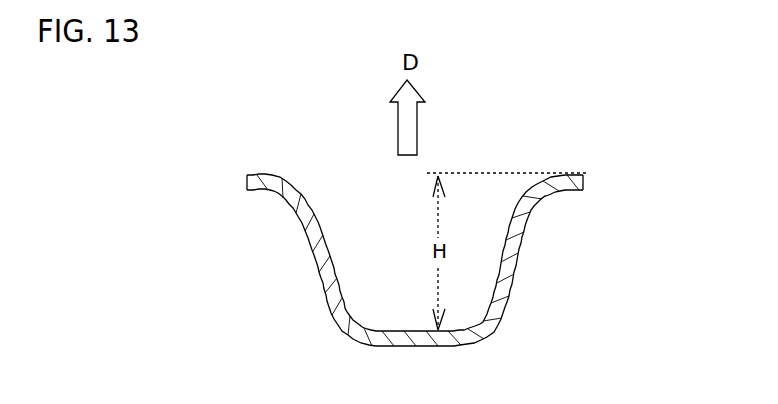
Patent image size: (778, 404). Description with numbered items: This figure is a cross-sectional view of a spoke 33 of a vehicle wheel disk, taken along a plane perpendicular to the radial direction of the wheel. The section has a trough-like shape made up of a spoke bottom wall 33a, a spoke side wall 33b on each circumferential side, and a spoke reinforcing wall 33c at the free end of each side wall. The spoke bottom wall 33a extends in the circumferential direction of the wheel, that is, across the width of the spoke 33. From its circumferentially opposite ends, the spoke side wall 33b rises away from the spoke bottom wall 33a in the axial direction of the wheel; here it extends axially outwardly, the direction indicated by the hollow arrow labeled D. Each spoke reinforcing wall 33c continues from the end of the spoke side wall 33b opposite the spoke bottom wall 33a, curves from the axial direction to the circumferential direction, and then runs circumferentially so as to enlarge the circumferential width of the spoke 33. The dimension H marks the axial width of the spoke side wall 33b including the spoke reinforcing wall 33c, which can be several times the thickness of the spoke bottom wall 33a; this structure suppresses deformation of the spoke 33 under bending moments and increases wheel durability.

The spoke 33 is at (400, 287).
The spoke bottom wall 33a is at (410, 341).
The spoke side wall 33b is at (312, 251).
The spoke reinforcing wall 33c is at (258, 192).